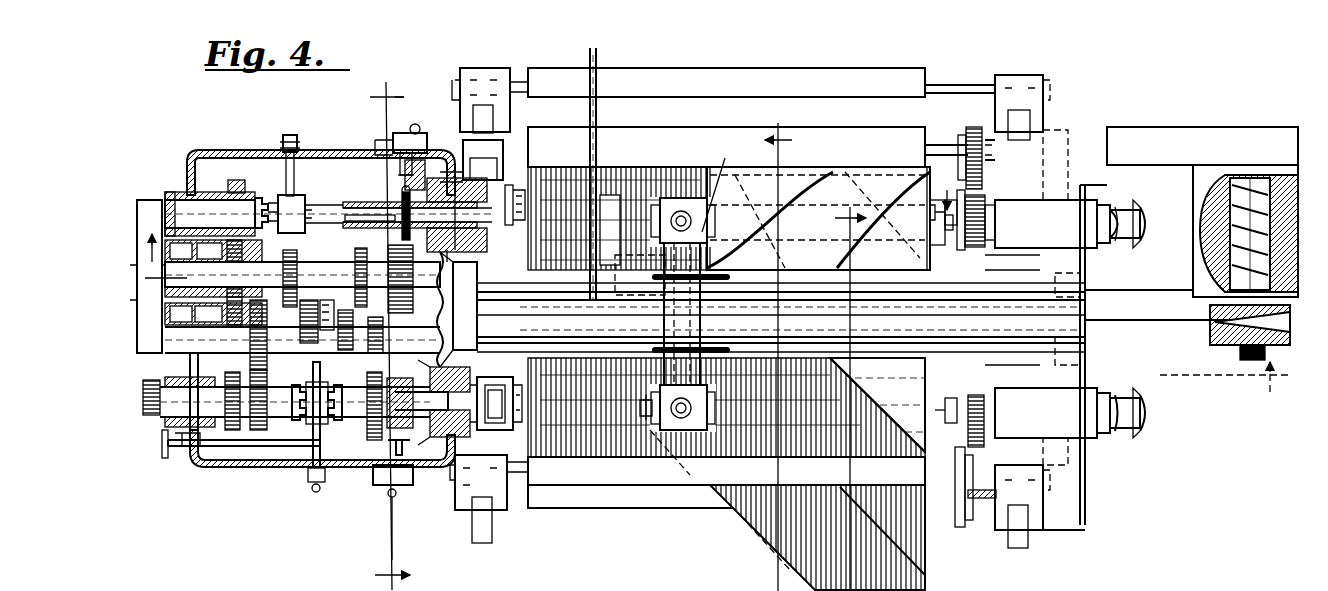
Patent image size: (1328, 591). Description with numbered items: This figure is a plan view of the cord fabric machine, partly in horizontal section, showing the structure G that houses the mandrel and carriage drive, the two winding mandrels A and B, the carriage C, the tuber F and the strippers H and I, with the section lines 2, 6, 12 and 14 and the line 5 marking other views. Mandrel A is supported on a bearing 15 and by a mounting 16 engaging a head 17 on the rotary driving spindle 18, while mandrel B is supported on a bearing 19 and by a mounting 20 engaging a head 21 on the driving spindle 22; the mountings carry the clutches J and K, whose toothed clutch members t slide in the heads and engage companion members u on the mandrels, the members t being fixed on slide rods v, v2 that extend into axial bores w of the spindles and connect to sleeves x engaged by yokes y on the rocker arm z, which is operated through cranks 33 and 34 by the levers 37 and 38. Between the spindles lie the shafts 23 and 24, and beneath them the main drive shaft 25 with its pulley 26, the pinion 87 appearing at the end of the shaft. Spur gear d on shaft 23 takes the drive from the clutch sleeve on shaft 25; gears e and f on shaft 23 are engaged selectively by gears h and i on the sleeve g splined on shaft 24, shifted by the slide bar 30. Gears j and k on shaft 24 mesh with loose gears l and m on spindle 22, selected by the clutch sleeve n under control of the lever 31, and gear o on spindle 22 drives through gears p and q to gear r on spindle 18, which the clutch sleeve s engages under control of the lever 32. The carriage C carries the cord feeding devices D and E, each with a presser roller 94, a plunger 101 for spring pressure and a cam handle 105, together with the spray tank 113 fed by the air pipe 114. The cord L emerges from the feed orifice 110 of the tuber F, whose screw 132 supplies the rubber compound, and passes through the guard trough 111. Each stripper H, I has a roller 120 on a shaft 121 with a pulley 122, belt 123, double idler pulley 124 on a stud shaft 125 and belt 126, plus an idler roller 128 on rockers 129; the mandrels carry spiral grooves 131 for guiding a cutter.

The structure G is at (194, 124).
The rotary driving spindle 18 is at (185, 197).
The clutch sleeve s is at (283, 205).
The spur gear r is at (236, 176).
The lever 32 is at (284, 136).
The crank 33 is at (395, 150).
The operating lever 37 is at (412, 130).
The slide rod v is at (418, 175).
The sleeve x is at (400, 200).
The longitudinal bore w is at (362, 216).
The head 17 is at (471, 161).
The mounting 16 is at (512, 188).
The rocker 129 is at (482, 72).
The section line 12 is at (390, 327).
The shaft 23 is at (218, 270).
The main drive shaft 25 is at (180, 251).
The pulley 26 is at (178, 314).
The shaft 24 is at (205, 314).
The section line 6 is at (722, 312).
The spur gear q is at (243, 255).
The spur gear e is at (298, 258).
The spur gear f is at (354, 258).
The spur gear d is at (388, 252).
The spur gear h is at (300, 319).
The spur gear j is at (270, 305).
The sleeve g is at (326, 309).
The spur gear i is at (343, 322).
The spur gear k is at (375, 327).
The gear shaft 5 is at (230, 400).
The pinion 87 is at (144, 387).
The spur gear p is at (222, 368).
The spur gear o is at (230, 428).
The loose gear l is at (258, 432).
The clutch sleeve n is at (306, 425).
The loose gear m is at (370, 440).
The lever 31 is at (305, 492).
The slide bar 30 is at (225, 447).
The rotary driving spindle 22 is at (175, 415).
The yoke y is at (428, 372).
The slide rod v2 is at (422, 385).
The crank 34 is at (410, 448).
The operating lever 38 is at (398, 496).
The mounting 20 is at (515, 375).
The head 21 is at (480, 391).
The toothed clutch member u is at (512, 406).
The toothed clutch member t is at (472, 347).
The clutch member J is at (472, 308).
The clutch member K is at (500, 430).
The idler roller 128 is at (830, 70).
The roller 120 is at (672, 128).
The pipe 114 is at (589, 109).
The cord feeding device D is at (718, 220).
The cord feeding device E is at (706, 435).
The spirally arranged groove 131 is at (862, 240).
The tank 113 is at (600, 283).
The plunger 101 is at (730, 322).
The guard trough 111 is at (995, 307).
The handle 105 is at (652, 428).
The rocker arm z is at (648, 408).
The section line 2 is at (745, 408).
The feeding and presser roller 94 is at (716, 186).
The winding mandrel A is at (860, 172).
The carriage C is at (730, 252).
The section line 14 is at (850, 390).
The bearing 15 is at (858, 347).
The stripper H is at (915, 122).
The winding mandrel B is at (930, 368).
The stripper I is at (935, 515).
The bearing 19 is at (948, 404).
The shaft 121 is at (945, 150).
The pulley 122 is at (972, 125).
The belt 123 is at (985, 190).
The double idler pulley 124 is at (985, 226).
The stud shaft 125 is at (1012, 255).
The belt 126 is at (1012, 318).
The cord L is at (1128, 322).
The tuber F is at (1230, 120).
The screw 132 is at (1232, 225).
The feed orifice 110 is at (1210, 320).